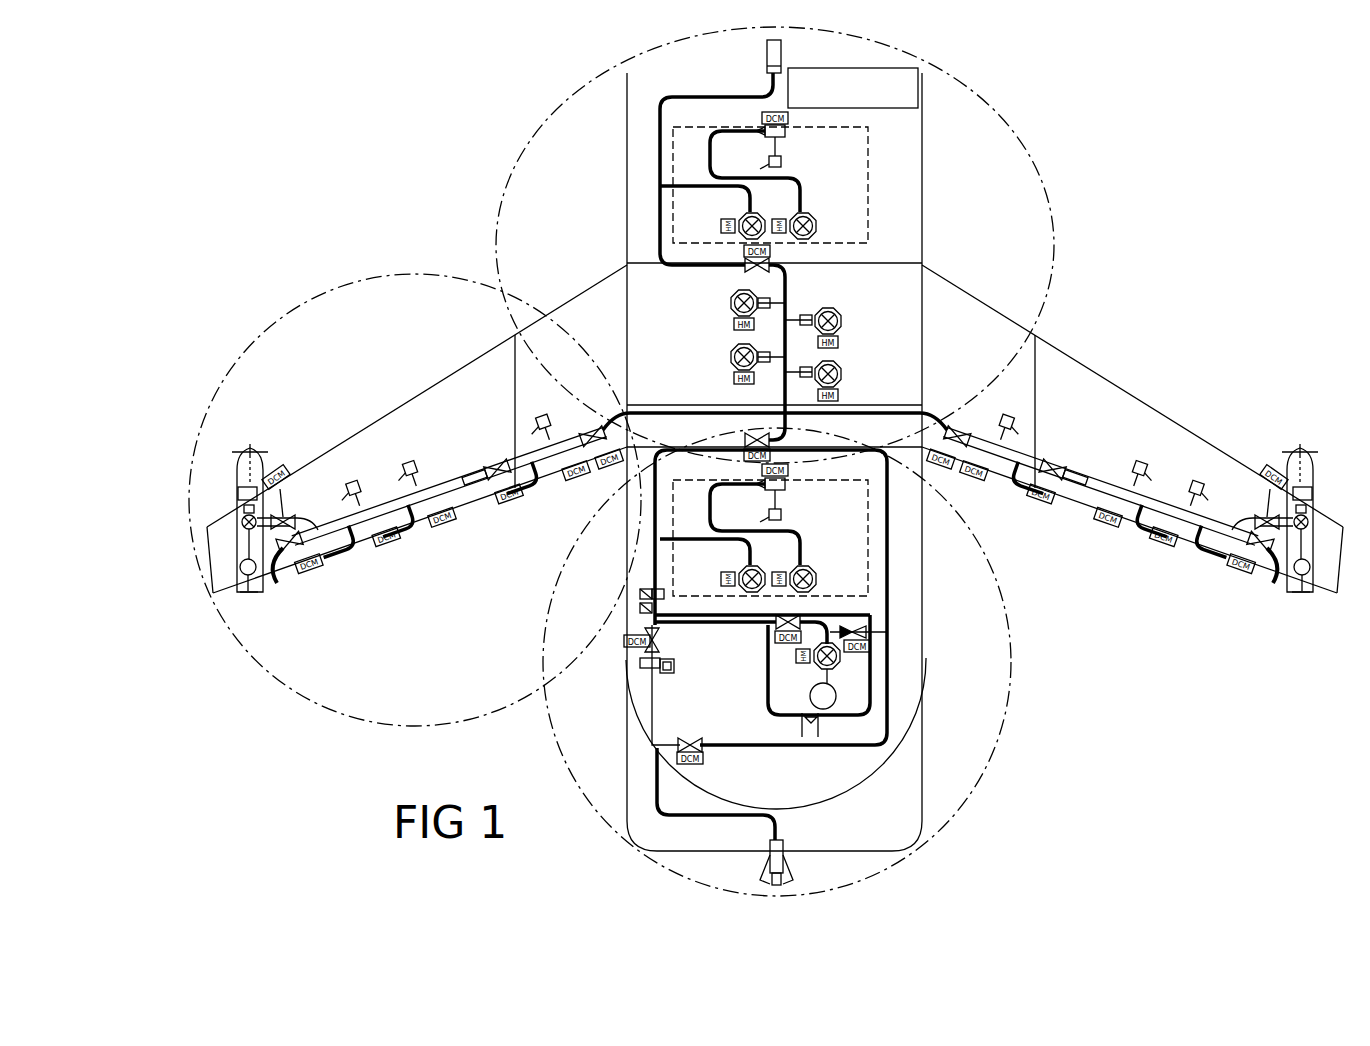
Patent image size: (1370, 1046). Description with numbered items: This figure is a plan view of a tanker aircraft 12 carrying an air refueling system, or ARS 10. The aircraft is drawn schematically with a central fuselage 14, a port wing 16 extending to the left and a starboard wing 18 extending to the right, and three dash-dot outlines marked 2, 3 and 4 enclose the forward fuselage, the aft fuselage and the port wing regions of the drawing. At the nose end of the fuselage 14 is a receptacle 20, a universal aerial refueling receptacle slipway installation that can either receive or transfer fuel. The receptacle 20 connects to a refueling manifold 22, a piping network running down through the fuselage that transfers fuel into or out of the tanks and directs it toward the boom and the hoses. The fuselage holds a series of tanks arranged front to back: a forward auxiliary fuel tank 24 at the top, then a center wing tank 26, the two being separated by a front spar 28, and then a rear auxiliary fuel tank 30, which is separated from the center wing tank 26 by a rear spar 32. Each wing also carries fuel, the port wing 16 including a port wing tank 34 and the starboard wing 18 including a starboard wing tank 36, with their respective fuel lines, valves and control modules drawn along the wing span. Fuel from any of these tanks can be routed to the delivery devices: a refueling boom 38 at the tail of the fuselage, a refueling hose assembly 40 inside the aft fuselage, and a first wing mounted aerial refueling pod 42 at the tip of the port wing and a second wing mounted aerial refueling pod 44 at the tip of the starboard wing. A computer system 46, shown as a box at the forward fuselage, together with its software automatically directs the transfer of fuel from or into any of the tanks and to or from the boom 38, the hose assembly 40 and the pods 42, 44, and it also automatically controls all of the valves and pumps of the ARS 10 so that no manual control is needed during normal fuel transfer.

The fuselage fuel system detail region 2 is at (1028, 136).
The lower fuselage detail region 3 is at (995, 775).
The wing detail region 4 is at (270, 318).
The ARS 10 is at (466, 152).
The tanker aircraft 12 is at (930, 182).
The fuselage 14 is at (923, 600).
The port wing 16 is at (582, 308).
The starboard wing 18 is at (967, 320).
The receptacle 20 is at (766, 51).
The refueling manifold 22 is at (658, 134).
The forward auxiliary fuel tank 24 is at (868, 193).
The center wing tank 26 is at (900, 337).
The front spar 28 is at (900, 255).
The rear auxiliary fuel tank 30 is at (900, 538).
The rear spar 32 is at (920, 485).
The port wing tank 34 is at (437, 454).
The starboard wing tank 36 is at (1153, 457).
The refueling boom 38 is at (770, 855).
The refueling hose assembly 40 is at (825, 695).
The first wing mounted aerial refueling pod 42 is at (240, 476).
The second wing mounted aerial refueling pod 44 is at (1310, 476).
The computer system 46 is at (845, 68).